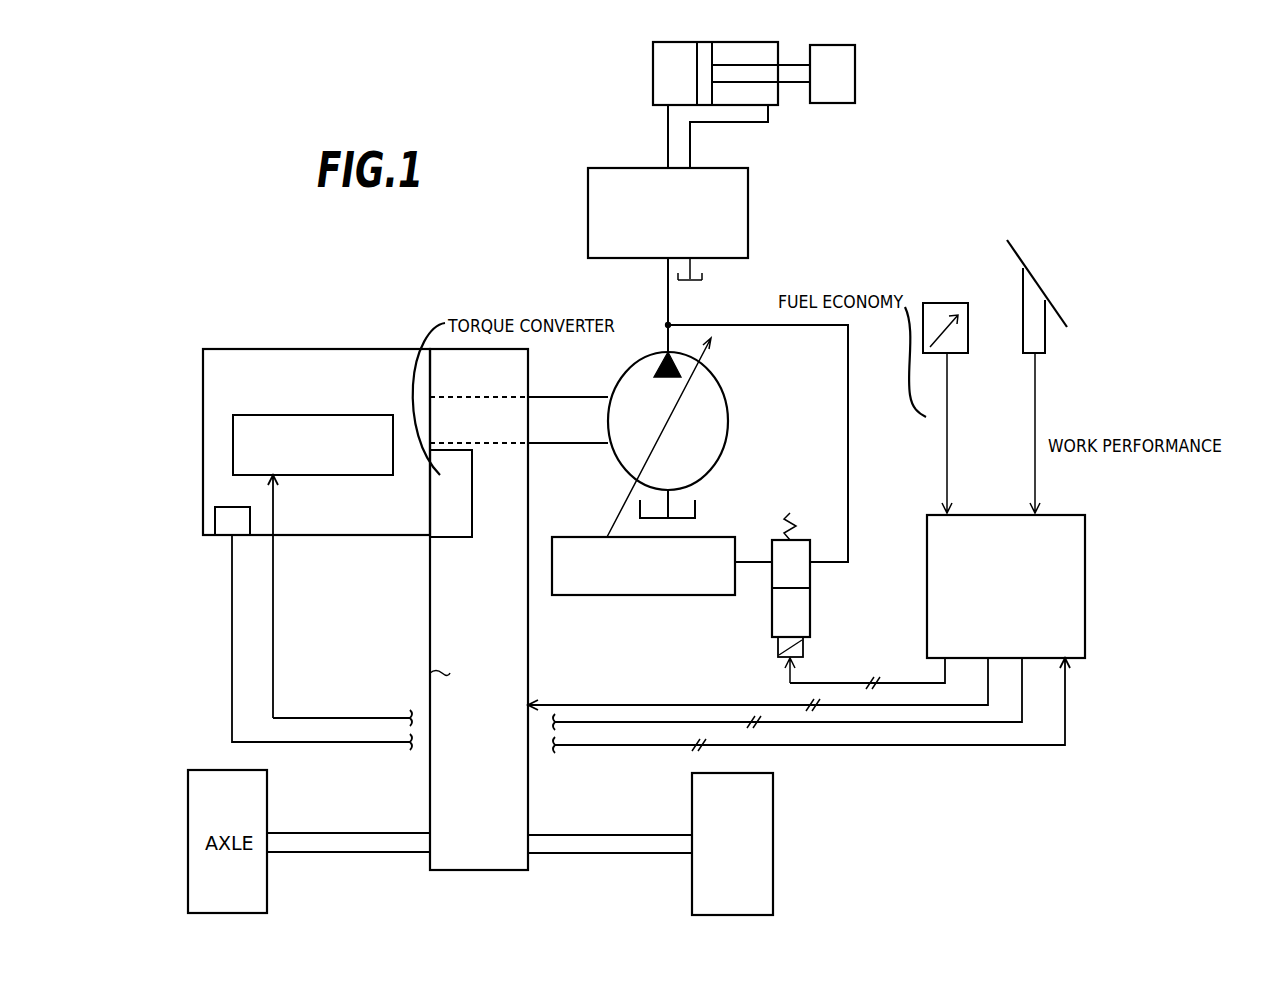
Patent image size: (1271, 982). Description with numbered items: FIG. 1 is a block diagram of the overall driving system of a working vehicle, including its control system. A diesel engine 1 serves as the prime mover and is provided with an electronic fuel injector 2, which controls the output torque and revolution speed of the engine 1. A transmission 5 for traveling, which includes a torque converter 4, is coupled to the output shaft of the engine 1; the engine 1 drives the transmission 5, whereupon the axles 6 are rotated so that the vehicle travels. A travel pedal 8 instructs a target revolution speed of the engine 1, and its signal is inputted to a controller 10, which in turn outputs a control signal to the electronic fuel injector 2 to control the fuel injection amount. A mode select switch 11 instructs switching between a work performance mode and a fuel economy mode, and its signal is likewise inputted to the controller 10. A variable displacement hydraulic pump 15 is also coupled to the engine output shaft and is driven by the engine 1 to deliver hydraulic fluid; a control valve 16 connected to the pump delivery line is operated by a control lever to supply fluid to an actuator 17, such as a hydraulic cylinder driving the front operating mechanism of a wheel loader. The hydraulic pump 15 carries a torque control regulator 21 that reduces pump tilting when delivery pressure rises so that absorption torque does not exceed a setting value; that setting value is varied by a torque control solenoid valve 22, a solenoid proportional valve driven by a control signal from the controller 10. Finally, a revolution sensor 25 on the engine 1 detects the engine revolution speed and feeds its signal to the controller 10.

The engine 1 is at (318, 349).
The electronic fuel injector 2 is at (233, 444).
The revolution sensor 25 is at (215, 520).
The torque converter 4 is at (448, 538).
The transmission 5 is at (528, 643).
The axle 6 is at (773, 843).
The travel pedal 8 is at (1065, 322).
The controller 10 is at (1085, 587).
The mode select switch 11 is at (947, 303).
The variable displacement hydraulic pump 15 is at (728, 392).
The control valve 16 is at (748, 198).
The actuator 17 is at (738, 42).
The torque control regulator 21 is at (650, 597).
The torque control solenoid valve 22 is at (810, 600).